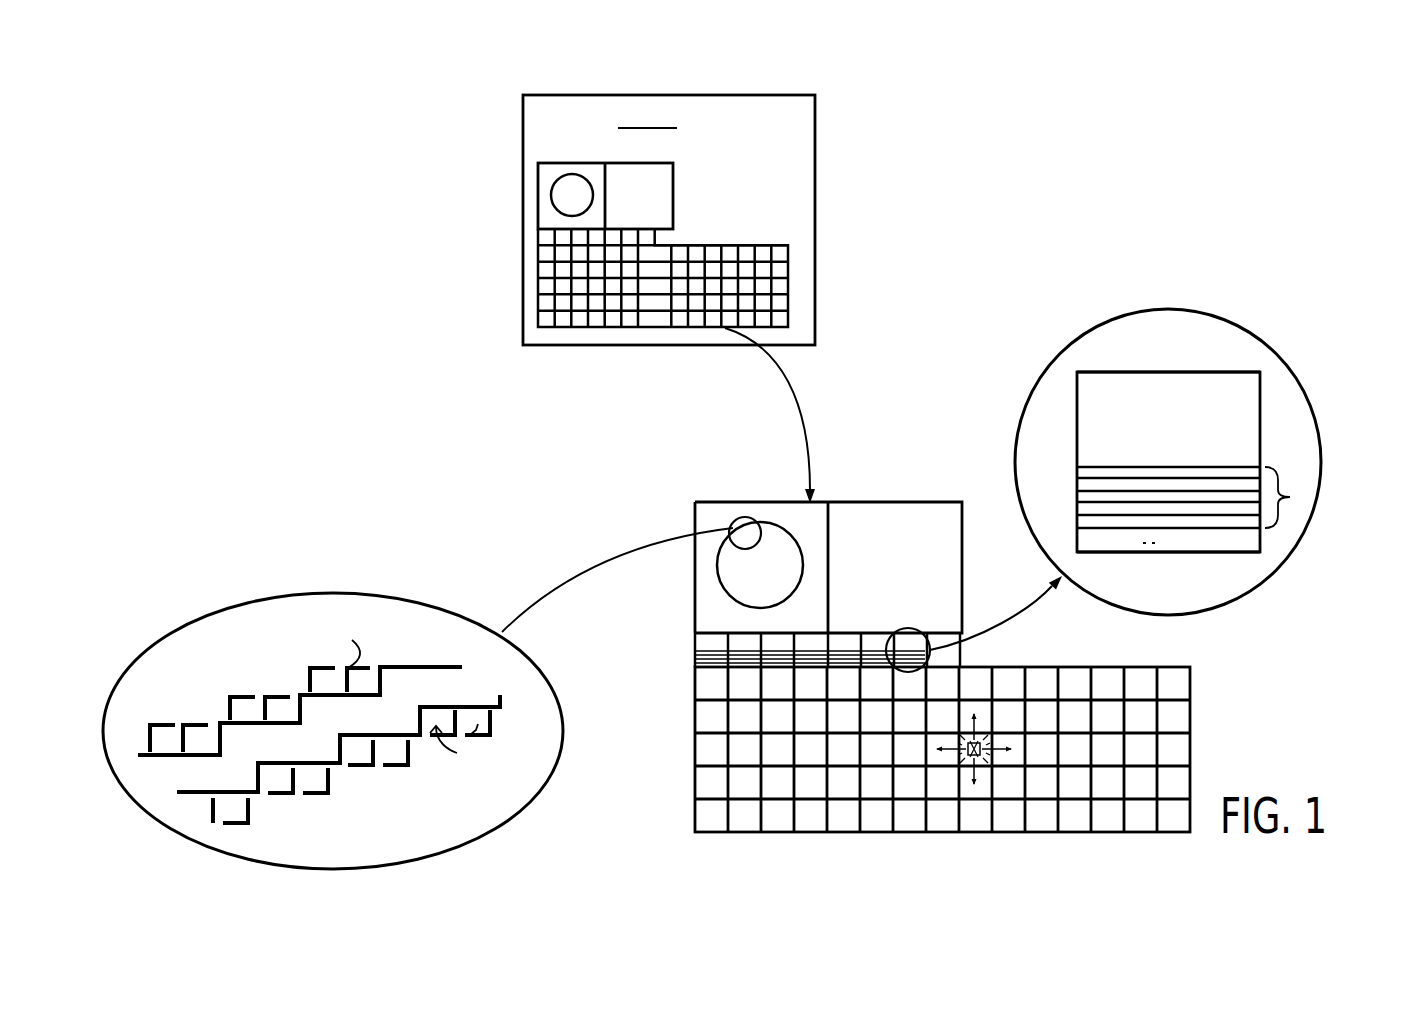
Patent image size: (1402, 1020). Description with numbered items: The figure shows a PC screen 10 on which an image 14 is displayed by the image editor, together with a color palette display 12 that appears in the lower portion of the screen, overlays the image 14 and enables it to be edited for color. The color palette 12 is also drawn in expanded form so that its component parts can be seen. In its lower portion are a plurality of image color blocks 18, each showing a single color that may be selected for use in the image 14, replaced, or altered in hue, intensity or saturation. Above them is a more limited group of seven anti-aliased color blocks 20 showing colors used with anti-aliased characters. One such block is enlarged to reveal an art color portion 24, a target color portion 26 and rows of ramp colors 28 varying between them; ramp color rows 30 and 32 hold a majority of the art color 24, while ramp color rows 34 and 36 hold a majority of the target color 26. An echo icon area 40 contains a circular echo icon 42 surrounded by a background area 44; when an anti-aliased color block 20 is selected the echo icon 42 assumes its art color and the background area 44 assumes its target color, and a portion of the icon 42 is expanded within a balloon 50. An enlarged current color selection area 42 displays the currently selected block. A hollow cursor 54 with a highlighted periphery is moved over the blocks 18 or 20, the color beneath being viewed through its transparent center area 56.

The PC screen 10 is at (815, 185).
The color palette display 12 is at (708, 220).
The image 14 is at (695, 114).
The image color blocks 18 is at (770, 818).
The anti-aliased color blocks 20 is at (705, 642).
The art color portion 24 is at (1228, 398).
The target color portion 26 is at (1118, 538).
The ramp colors 28 is at (1297, 492).
The ramp color row 30 is at (1087, 468).
The ramp color row 32 is at (1087, 480).
The ramp color row 34 is at (1087, 505).
The ramp color row 36 is at (1087, 518).
The echo icon area 40 is at (778, 495).
The echo icon 42 is at (728, 590).
The background area 44 is at (707, 622).
The balloon 50 is at (400, 570).
The cursor 54 is at (977, 730).
The transparent center area 56 is at (977, 762).